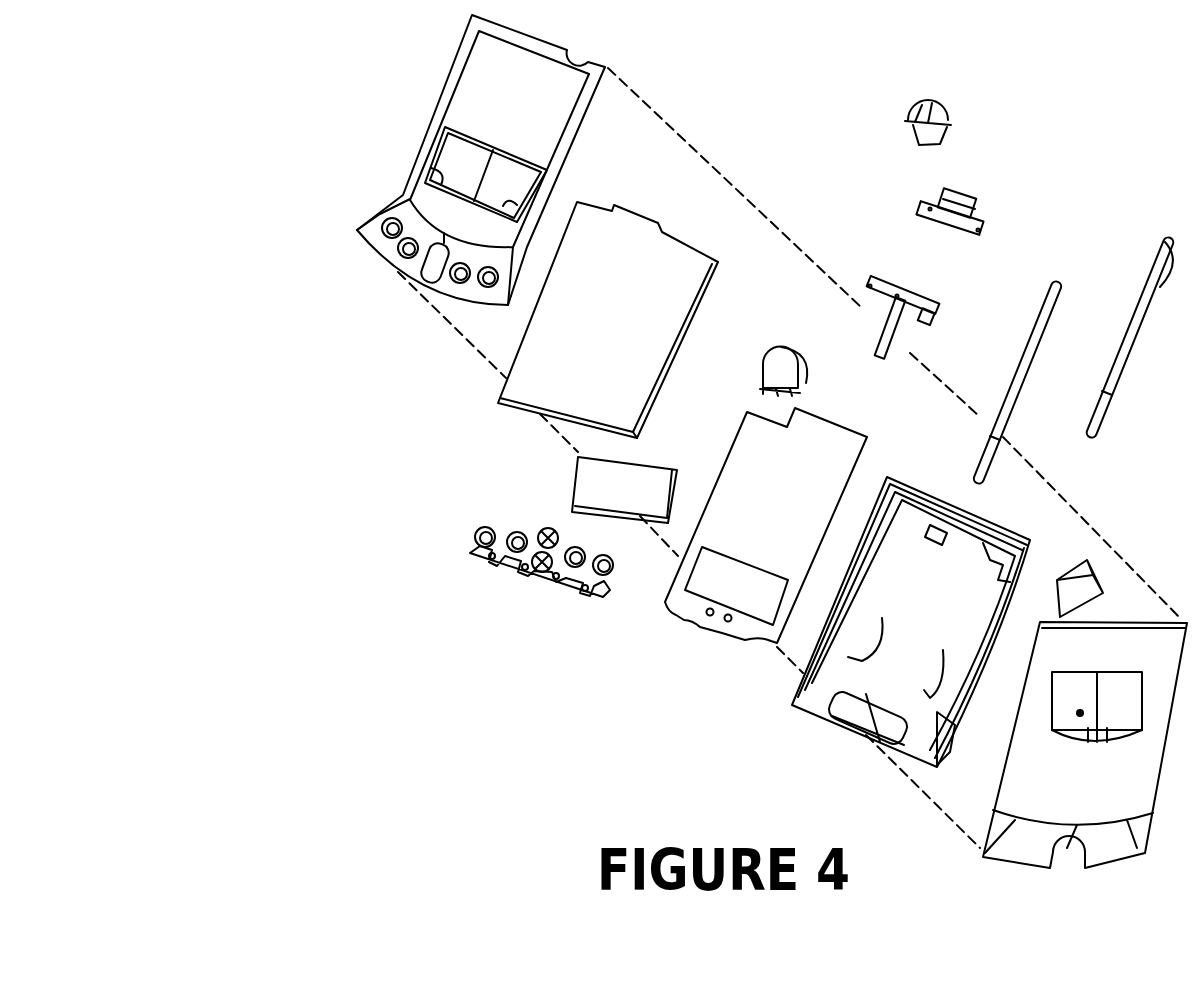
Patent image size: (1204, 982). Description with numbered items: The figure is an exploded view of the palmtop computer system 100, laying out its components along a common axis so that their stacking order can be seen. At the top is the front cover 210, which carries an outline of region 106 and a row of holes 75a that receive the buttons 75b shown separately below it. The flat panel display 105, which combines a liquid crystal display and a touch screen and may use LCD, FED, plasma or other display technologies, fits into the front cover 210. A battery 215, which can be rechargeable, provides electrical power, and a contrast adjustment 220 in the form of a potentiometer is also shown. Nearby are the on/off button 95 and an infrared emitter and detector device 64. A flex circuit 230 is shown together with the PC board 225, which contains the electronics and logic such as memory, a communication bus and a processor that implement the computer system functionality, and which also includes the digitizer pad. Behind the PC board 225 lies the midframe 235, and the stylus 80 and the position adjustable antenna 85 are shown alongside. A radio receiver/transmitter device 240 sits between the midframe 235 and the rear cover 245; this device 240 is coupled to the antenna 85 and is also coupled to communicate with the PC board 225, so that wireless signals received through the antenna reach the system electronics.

The palmtop computer system 100 is at (205, 57).
The front cover 210 is at (528, 116).
The region 106 is at (440, 160).
The holes 75a is at (385, 222).
The flat panel display 105 is at (630, 331).
The battery 215 is at (645, 495).
The buttons 75b is at (508, 535).
The contrast adjustment 220 is at (778, 346).
The PC board 225 is at (797, 511).
The midframe 235 is at (943, 611).
The radio receiver/transmitter device 240 is at (1079, 568).
The rear cover 245 is at (1103, 794).
The on/off button 95 is at (950, 112).
The infrared emitter and detector device 64 is at (966, 189).
The flex circuit 230 is at (917, 291).
The position adjustable antenna 85 is at (1044, 344).
The stylus 80 is at (1147, 319).